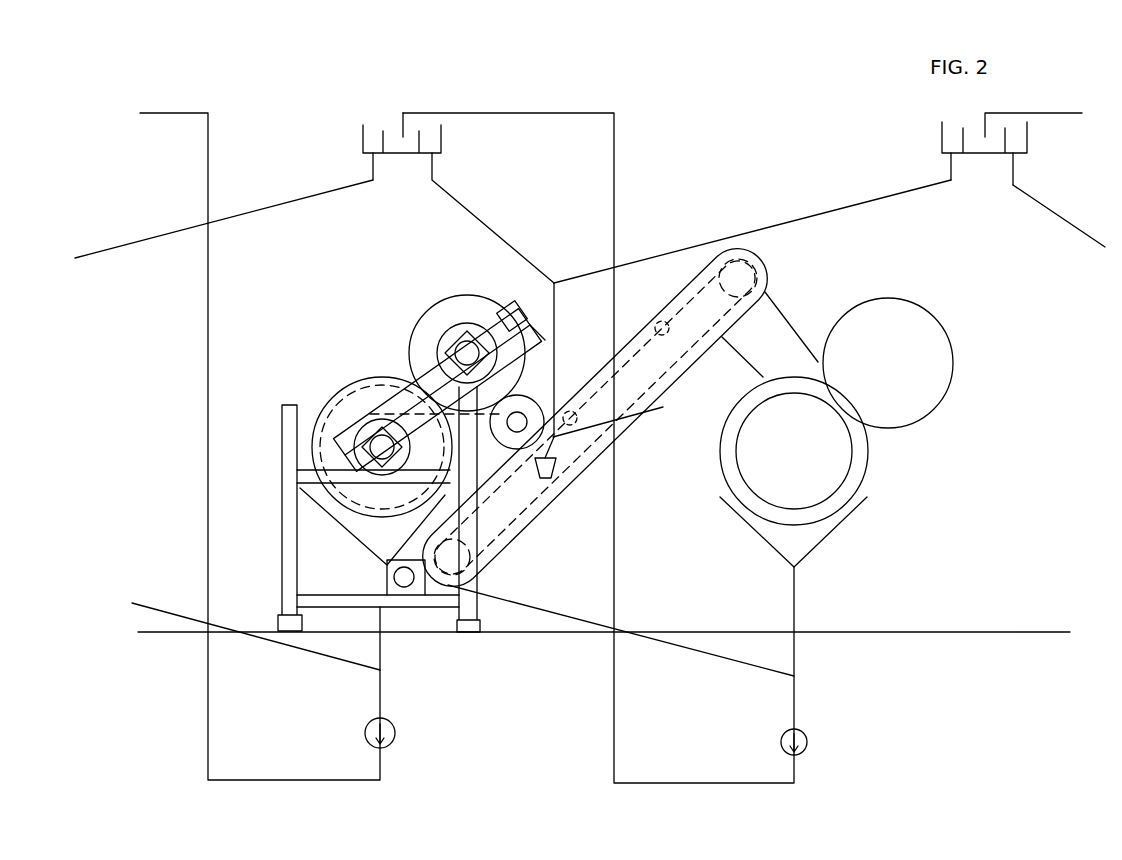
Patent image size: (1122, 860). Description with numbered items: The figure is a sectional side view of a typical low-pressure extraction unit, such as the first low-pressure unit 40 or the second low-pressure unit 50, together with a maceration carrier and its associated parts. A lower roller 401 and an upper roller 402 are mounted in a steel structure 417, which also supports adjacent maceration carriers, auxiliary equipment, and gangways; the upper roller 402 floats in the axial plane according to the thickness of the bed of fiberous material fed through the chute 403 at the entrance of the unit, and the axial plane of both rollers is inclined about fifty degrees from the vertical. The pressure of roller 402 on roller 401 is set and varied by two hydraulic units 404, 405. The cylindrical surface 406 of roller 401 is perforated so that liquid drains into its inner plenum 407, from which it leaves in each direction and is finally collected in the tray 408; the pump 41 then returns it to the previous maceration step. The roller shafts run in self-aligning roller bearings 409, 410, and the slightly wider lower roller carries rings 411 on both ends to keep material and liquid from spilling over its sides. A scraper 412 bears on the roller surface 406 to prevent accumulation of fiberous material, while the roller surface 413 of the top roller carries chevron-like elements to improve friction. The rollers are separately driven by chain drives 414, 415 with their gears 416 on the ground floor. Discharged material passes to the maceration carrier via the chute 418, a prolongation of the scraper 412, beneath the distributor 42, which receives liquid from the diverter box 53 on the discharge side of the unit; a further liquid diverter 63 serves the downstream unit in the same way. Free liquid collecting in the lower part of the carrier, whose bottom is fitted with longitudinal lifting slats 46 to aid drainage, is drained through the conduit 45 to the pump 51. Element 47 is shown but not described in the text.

The first low-pressure unit 40 is at (355, 285).
The pump 41 is at (396, 733).
The distributor 42 is at (557, 470).
The conduit 45 is at (527, 521).
The lifting slats 46 is at (625, 420).
The guide plate 47 is at (690, 372).
The second low-pressure unit 50 is at (833, 328).
The pump 51 is at (808, 742).
The diverter box 53 is at (441, 140).
The liquid diverter 63 is at (1030, 148).
The lower roller 401 is at (322, 440).
The upper roller 402 is at (472, 305).
The chute 403 is at (357, 380).
The hydraulic unit 404 is at (518, 318).
The hydraulic unit 405 is at (537, 322).
The cylindrical surface 406 is at (340, 463).
The inner plenum 407 is at (340, 480).
The tray 408 is at (358, 525).
The roller bearings 409 is at (378, 443).
The roller bearings 410 is at (457, 310).
The rings 411 is at (310, 433).
The scraper 412 is at (855, 450).
The roller surface 413 is at (500, 303).
The chain drive 414 is at (425, 565).
The chain drive 415 is at (540, 400).
The gears 416 is at (404, 588).
The steel structure 417 is at (282, 424).
The chute 418 is at (875, 480).